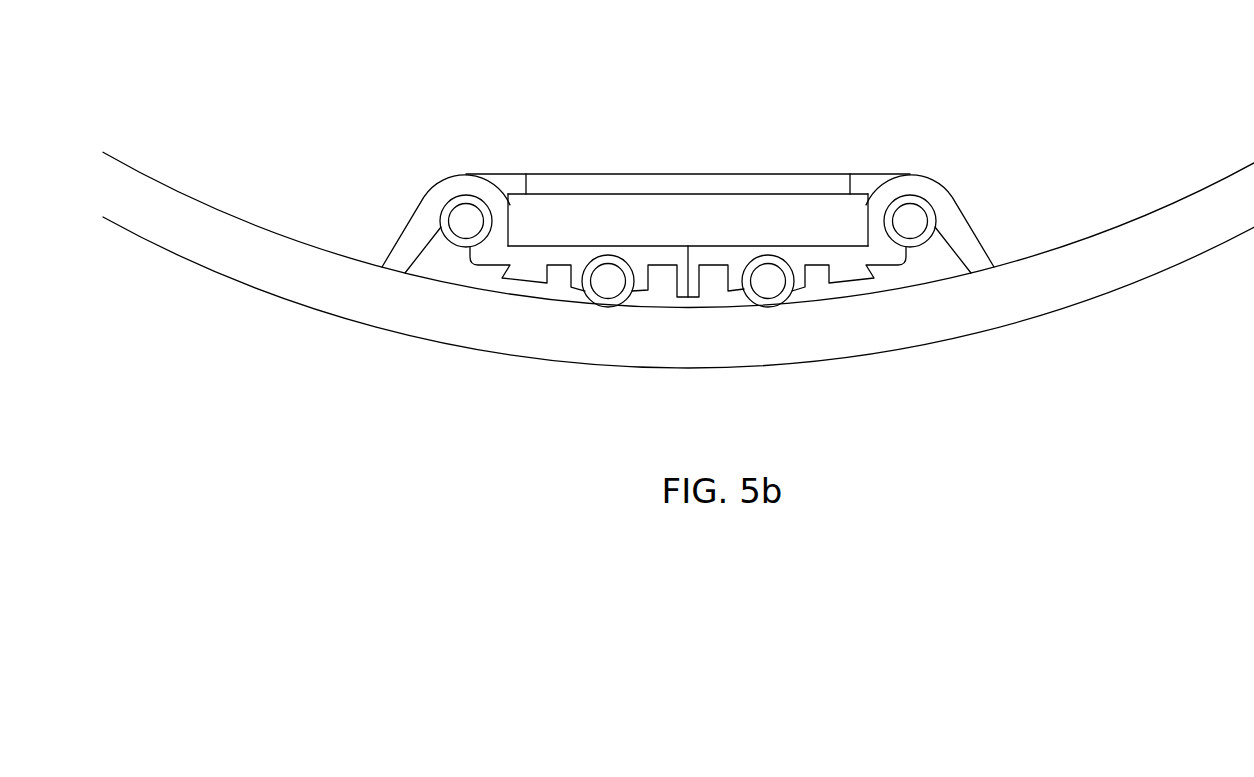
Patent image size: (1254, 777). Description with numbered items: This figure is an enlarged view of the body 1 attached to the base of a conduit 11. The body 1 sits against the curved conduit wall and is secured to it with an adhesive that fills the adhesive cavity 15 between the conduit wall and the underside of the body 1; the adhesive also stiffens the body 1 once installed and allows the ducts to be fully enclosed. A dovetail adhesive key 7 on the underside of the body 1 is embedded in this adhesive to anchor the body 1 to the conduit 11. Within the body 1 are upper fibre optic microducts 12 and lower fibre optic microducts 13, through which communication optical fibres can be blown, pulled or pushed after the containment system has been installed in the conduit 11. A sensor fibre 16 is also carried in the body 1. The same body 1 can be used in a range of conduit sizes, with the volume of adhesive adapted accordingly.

The body 1 is at (543, 133).
The dovetail adhesive key 7 is at (847, 275).
The conduit 11 is at (252, 289).
The upper fibre optic microducts 12 is at (470, 220).
The lower fibre optic microducts 13 is at (768, 283).
The adhesive cavity 15 is at (938, 267).
The sensor fibre 16 is at (688, 197).